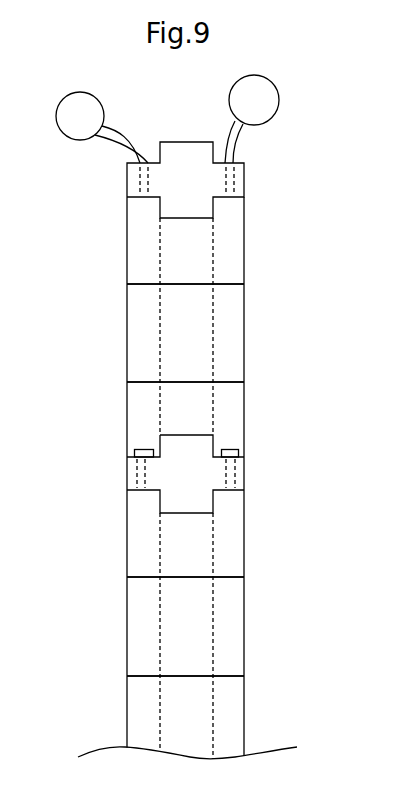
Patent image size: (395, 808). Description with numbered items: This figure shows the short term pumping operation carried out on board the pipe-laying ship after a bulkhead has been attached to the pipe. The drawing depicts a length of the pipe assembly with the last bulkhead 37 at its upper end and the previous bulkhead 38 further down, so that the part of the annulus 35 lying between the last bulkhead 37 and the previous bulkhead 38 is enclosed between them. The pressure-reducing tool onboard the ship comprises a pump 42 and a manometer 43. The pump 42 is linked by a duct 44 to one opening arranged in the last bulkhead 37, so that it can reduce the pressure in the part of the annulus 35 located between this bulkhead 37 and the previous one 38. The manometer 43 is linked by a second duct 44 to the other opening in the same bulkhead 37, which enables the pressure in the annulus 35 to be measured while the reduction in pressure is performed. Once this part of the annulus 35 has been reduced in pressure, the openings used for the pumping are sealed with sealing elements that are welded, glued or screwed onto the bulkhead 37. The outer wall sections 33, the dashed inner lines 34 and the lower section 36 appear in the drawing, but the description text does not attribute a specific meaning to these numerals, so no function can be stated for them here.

The tube segment outer wall 33 is at (244, 349).
The inner pipe 34 is at (213, 264).
The part of the annulus 35 is at (230, 310).
The lower tube segment 36 is at (230, 625).
The last bulkhead 37 is at (128, 186).
The previous bulkhead 38 is at (128, 472).
The pump 42 is at (80, 116).
The manometer 43 is at (254, 100).
The duct 44 is at (115, 124).